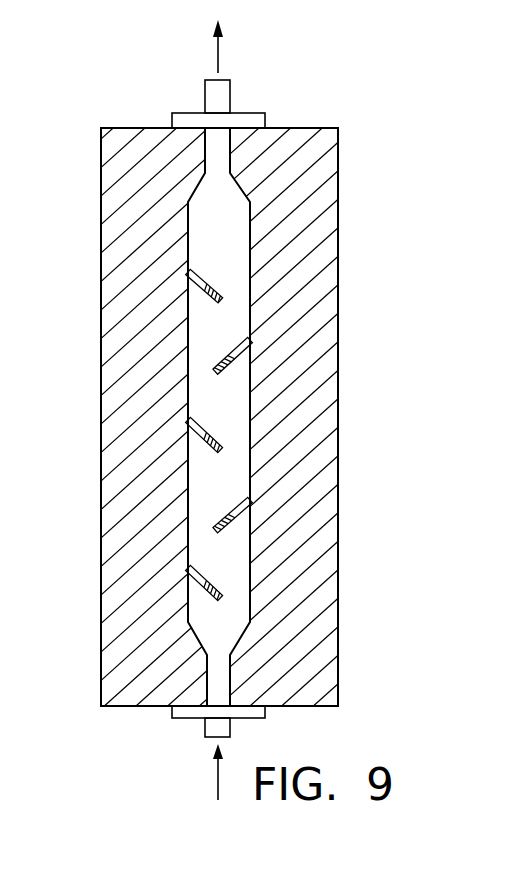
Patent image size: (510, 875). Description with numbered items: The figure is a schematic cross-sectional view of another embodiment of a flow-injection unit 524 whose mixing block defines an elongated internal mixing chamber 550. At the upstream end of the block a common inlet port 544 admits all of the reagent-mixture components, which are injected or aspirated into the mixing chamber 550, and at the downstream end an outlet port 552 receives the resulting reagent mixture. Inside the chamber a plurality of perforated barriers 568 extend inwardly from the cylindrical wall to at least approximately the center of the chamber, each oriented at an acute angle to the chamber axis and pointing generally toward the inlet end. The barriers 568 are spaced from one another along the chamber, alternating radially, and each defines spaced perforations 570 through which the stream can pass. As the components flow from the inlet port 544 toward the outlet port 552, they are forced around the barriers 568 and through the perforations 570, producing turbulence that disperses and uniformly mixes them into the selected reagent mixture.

The flow-injection unit 524 is at (358, 208).
The common inlet port 544 is at (210, 704).
The outlet port 552 is at (230, 142).
The mixing chamber 550 is at (190, 270).
The perforated barrier 568 is at (238, 352).
The perforations 570 is at (210, 447).